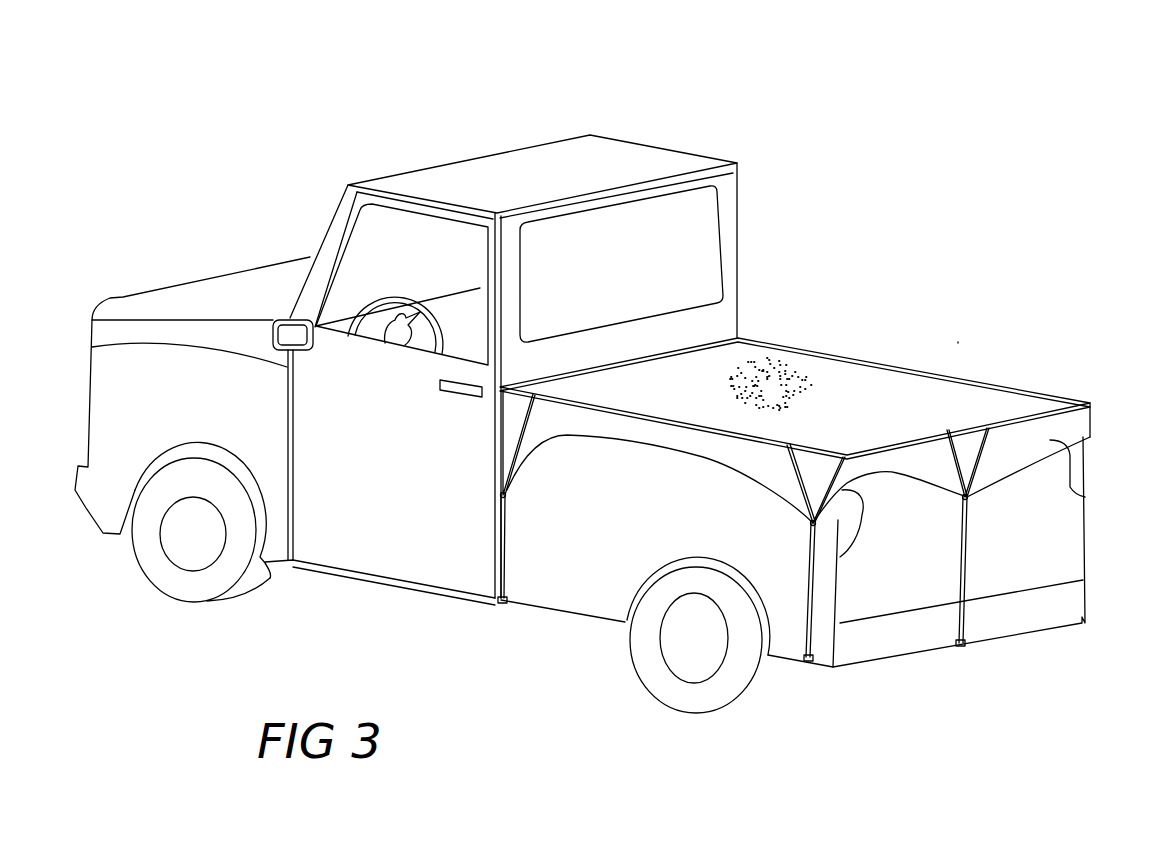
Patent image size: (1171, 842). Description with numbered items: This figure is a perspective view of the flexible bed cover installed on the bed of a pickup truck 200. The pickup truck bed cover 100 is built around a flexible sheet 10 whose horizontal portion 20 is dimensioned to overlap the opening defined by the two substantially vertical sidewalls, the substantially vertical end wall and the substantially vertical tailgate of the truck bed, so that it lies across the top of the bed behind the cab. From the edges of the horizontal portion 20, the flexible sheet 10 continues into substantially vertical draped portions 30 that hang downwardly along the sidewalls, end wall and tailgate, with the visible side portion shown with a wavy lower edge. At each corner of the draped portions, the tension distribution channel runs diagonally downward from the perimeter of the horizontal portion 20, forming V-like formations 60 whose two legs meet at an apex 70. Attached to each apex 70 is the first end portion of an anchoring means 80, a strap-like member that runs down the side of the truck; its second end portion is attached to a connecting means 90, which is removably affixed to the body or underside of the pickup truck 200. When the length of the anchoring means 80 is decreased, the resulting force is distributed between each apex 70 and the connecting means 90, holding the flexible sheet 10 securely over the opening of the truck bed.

The flexible sheet 10 is at (1080, 417).
The horizontal portion 20 is at (755, 377).
The substantially vertical draped portions 30 is at (683, 442).
The V-like formations 60 is at (525, 441).
The apex 70 is at (505, 495).
The anchoring means 80 is at (502, 550).
The connecting means 90 is at (503, 603).
The pickup truck bed cover 100 is at (958, 342).
The pickup truck 200 is at (538, 158).